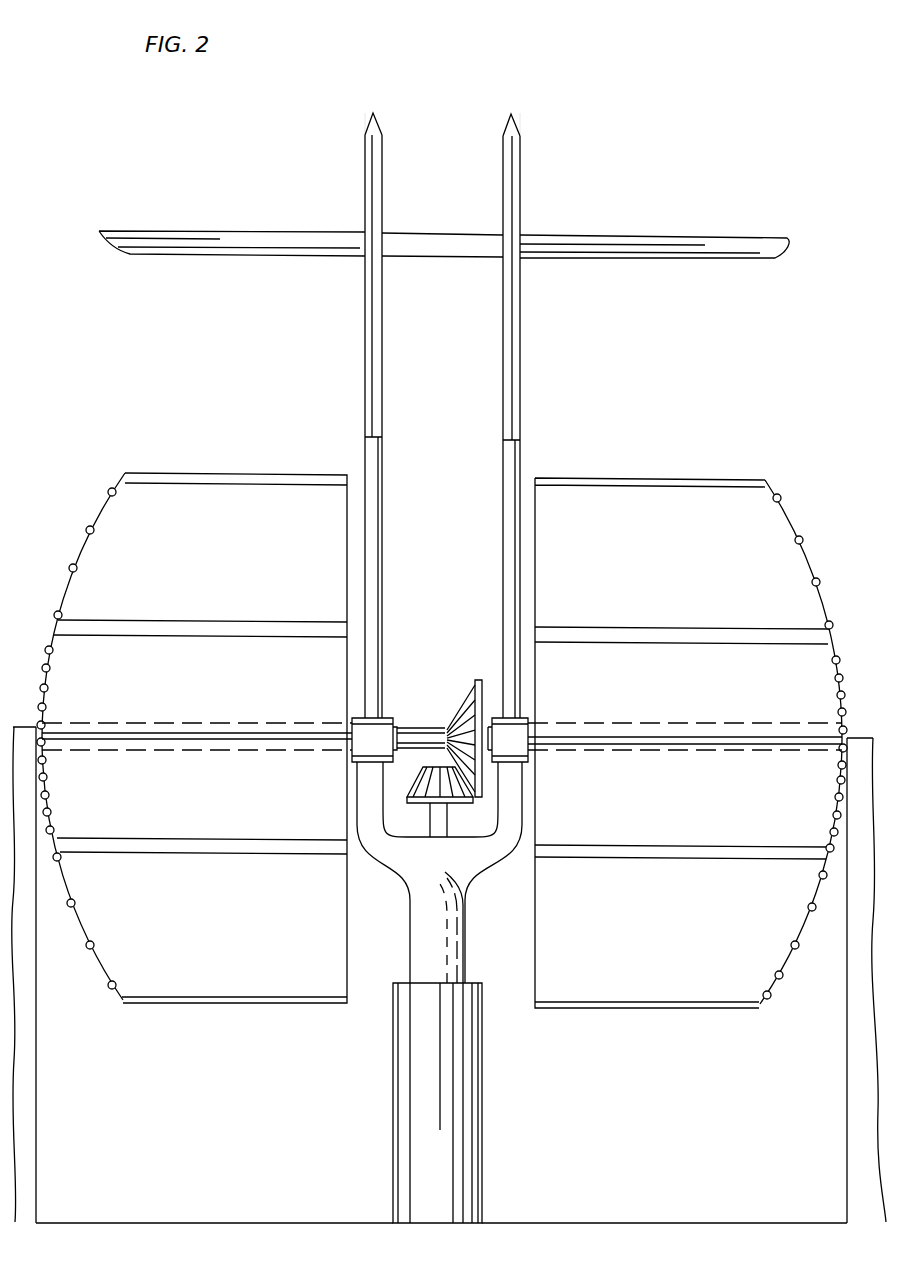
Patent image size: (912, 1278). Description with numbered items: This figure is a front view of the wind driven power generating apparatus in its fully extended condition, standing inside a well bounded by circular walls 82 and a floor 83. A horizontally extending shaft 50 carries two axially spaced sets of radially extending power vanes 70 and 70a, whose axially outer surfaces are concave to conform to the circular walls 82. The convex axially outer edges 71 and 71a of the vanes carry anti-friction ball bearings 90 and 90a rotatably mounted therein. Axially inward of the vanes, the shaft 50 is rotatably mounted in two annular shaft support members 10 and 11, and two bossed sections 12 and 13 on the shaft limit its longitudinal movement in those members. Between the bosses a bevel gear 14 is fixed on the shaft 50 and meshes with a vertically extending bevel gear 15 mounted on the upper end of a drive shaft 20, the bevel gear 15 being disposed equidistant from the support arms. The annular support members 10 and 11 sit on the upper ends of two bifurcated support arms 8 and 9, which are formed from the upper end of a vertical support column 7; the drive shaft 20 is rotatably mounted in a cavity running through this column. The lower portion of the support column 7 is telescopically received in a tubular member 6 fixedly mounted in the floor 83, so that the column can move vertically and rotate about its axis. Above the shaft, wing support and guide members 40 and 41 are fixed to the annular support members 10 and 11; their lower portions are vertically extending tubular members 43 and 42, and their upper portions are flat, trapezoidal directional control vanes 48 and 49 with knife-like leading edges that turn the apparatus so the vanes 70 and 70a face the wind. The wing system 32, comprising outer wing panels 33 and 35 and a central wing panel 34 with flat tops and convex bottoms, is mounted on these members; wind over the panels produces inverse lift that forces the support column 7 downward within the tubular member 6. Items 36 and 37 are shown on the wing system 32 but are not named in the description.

The tubular member 6 is at (482, 1100).
The vertical support column 7 is at (455, 932).
The support arm 8 is at (361, 838).
The support arm 9 is at (518, 838).
The annular shaft support member 10 is at (352, 718).
The annular shaft support member 11 is at (530, 722).
The bossed section 12 is at (485, 690).
The bossed section 13 is at (392, 722).
The bevel gear 14 is at (458, 710).
The bevel gear 15 is at (423, 780).
The drive shaft 20 is at (438, 830).
The wing system 32 is at (154, 226).
The outer wing panel 33 is at (233, 232).
The central wing panel 34 is at (432, 233).
The outer wing panel 35 is at (587, 234).
The bar right section 36 is at (711, 237).
The bar underside 37 is at (670, 261).
The wing support and guide member 40 is at (526, 358).
The wing support and guide member 41 is at (350, 346).
The tubular member 42 is at (383, 503).
The tubular member 43 is at (503, 511).
The directional control vane 48 is at (365, 284).
The directional control vane 49 is at (520, 300).
The shaft 50 is at (825, 746).
The power vanes 70 is at (661, 480).
The power vanes 70a is at (203, 472).
The axially outer edge 71 is at (808, 570).
The axially outer edge 71a is at (96, 512).
The circular walls 82 is at (36, 1098).
The floor 83 is at (205, 1223).
The ball bearings 90 is at (800, 540).
The ball bearings 90a is at (75, 566).